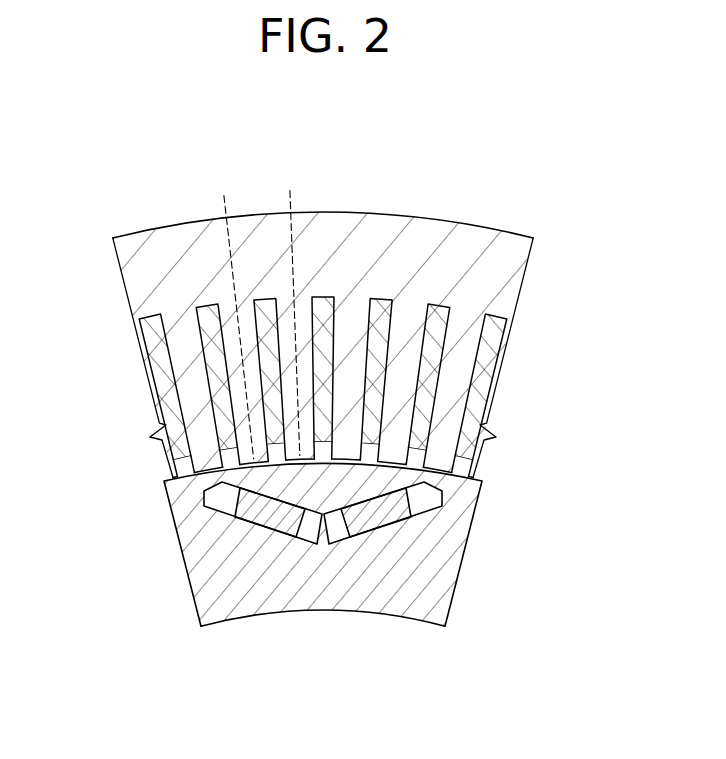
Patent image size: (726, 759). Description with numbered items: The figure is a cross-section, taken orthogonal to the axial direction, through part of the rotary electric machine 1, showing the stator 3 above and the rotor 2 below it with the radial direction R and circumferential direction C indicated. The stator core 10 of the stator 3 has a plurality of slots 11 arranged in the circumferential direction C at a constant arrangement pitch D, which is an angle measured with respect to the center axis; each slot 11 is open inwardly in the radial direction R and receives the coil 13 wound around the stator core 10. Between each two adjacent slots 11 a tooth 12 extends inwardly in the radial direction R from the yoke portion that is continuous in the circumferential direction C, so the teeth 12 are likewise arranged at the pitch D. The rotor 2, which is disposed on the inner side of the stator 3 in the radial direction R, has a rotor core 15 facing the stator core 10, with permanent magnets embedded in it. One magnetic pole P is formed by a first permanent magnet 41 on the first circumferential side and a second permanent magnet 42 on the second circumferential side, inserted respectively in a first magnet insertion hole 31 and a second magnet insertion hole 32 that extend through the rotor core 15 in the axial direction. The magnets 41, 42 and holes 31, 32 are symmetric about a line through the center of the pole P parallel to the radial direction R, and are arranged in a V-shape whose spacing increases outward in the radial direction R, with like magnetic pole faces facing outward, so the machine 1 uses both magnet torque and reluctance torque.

The rotary electric machine 1 is at (490, 169).
The rotor 2 is at (186, 576).
The stator 3 is at (144, 234).
The stator core 10 is at (130, 257).
The slot 11 is at (209, 368).
The tooth 12 is at (193, 441).
The coil 13 is at (213, 397).
The rotor core 15 is at (464, 590).
The first magnet insertion hole 31 is at (378, 521).
The second magnet insertion hole 32 is at (255, 521).
The first permanent magnet 41 is at (402, 510).
The second permanent magnet 42 is at (248, 507).
The magnetic pole P is at (327, 568).
The circumferential direction C is at (398, 113).
The arrangement pitch D is at (228, 186).
The radial direction R is at (555, 364).